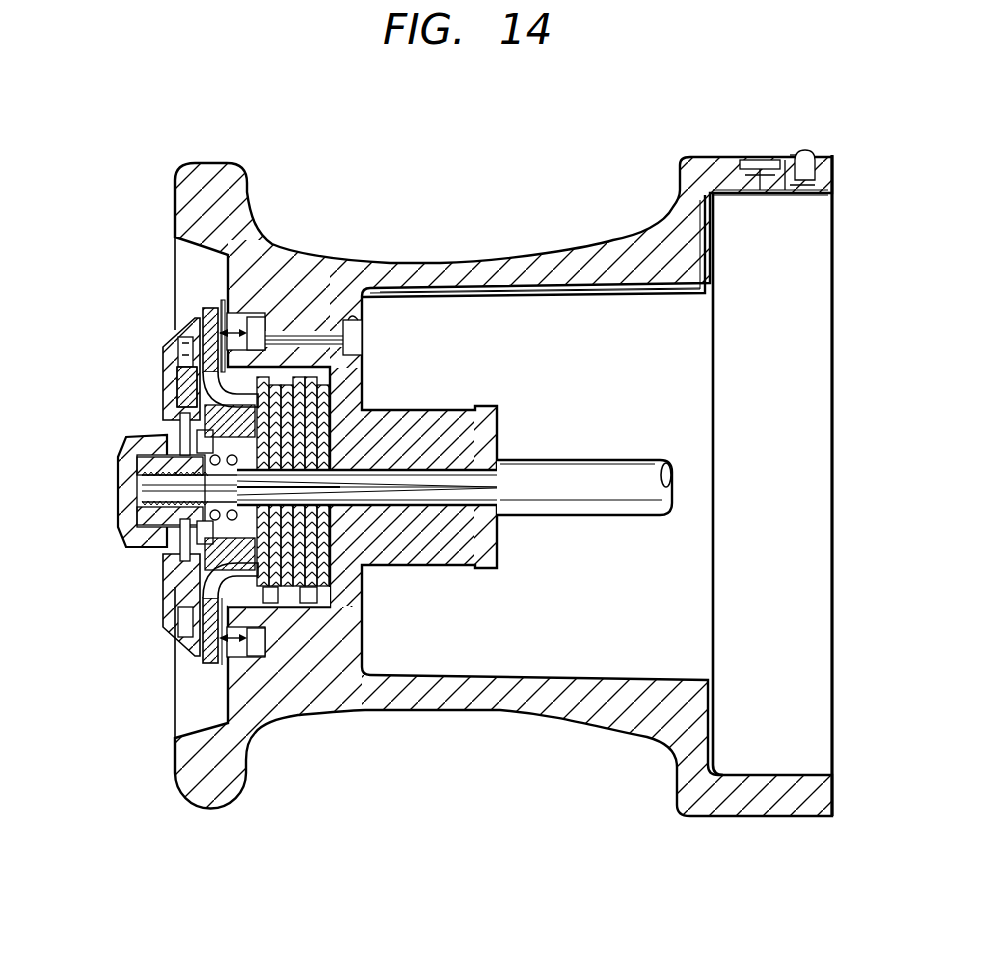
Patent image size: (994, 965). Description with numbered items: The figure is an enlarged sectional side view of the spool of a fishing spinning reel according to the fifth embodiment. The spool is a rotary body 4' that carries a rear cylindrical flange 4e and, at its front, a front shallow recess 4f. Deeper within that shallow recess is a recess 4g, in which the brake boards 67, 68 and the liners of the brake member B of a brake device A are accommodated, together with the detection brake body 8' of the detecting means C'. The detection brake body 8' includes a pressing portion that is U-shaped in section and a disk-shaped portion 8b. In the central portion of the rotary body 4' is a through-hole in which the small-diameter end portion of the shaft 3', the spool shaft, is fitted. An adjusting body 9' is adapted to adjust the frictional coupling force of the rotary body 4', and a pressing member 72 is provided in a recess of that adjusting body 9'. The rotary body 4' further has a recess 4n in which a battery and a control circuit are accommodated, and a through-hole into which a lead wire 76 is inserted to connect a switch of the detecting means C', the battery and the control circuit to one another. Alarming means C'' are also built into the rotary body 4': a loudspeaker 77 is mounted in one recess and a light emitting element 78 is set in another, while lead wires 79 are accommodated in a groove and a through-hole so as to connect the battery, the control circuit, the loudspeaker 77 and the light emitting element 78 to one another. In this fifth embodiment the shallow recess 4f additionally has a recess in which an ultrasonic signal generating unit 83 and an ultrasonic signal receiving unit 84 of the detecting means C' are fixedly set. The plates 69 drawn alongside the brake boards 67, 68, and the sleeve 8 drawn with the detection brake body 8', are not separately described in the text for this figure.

The rotary body 4' is at (456, 470).
The rear cylindrical flange 4e is at (832, 155).
The front shallow recess 4f is at (228, 300).
The recess 4g is at (247, 318).
The recess 4n is at (358, 326).
The loudspeaker 77 is at (750, 158).
The light emitting element 78 is at (800, 152).
The lead wires 79 is at (505, 287).
The ultrasonic signal generating unit 83 is at (245, 310).
The ultrasonic signal receiving unit 84 is at (223, 336).
The brake board 68 is at (303, 340).
The lead wire 76 is at (343, 335).
The brake board 67 is at (273, 607).
The separator plates 69 is at (303, 607).
The shaft 3' is at (454, 528).
The adjusting body 9' is at (135, 488).
The sleeve 8 is at (220, 544).
The disk-shaped portion 8b is at (203, 309).
The detection brake body 8' is at (153, 644).
The pressing member 72 is at (159, 380).
The brake device A is at (134, 346).
The brake member B is at (288, 353).
The detecting means C' is at (182, 448).
The alarming means C'' is at (787, 97).